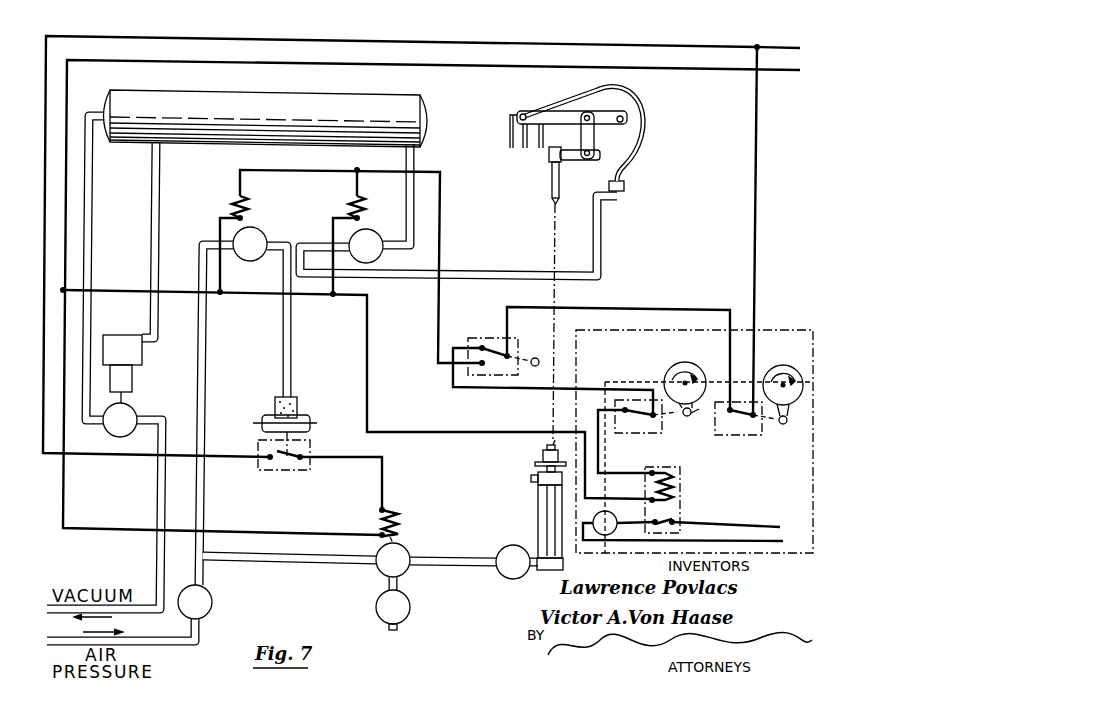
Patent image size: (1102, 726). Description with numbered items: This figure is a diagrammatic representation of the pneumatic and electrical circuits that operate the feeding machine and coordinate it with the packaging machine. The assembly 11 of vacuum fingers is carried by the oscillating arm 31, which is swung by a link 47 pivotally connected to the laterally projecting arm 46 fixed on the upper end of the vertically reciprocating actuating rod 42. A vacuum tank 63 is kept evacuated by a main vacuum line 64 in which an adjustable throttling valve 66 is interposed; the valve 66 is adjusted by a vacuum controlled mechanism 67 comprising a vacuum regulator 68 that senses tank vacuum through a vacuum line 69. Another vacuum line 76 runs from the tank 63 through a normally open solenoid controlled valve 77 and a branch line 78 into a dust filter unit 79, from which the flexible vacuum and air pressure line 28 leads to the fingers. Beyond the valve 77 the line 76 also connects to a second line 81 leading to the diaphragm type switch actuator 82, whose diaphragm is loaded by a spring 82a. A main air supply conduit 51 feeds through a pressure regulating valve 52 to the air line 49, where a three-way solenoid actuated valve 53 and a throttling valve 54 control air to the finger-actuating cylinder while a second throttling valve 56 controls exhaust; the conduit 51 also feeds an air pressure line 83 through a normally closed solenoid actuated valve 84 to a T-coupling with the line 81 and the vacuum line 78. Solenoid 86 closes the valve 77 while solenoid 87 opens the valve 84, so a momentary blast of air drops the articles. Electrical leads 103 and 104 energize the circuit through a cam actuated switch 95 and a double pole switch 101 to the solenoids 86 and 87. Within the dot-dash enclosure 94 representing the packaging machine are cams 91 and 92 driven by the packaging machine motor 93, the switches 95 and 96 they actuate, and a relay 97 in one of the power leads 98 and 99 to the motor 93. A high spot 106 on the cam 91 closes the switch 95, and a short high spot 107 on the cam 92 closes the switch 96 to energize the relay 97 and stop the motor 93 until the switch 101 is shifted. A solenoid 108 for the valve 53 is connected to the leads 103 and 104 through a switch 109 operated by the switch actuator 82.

The assembly of vacuum fingers 11 is at (500, 133).
The oscillating arm 31 is at (561, 112).
The vacuum and air pressure line 28 is at (644, 118).
The link 47 is at (592, 140).
The actuating rod 42 is at (548, 187).
The laterally projecting arm 46 is at (570, 162).
The dust filter unit 79 is at (626, 196).
The vacuum line 76 is at (414, 160).
The vacuum tank 63 is at (155, 130).
The main vacuum line 64 is at (93, 214).
The solenoid 87 is at (238, 203).
The solenoid 86 is at (353, 203).
The vacuum line 69 is at (152, 268).
The solenoid actuated valve 84 is at (266, 256).
The solenoid controlled valve 77 is at (385, 258).
The branch line 78 is at (385, 278).
The double pole switch 101 is at (495, 336).
The vacuum regulator 68 is at (125, 335).
The vacuum controlled mechanism 67 is at (145, 364).
The throttling valve 66 is at (137, 407).
The air pressure line 83 is at (204, 356).
The second line 81 is at (292, 353).
The switch actuator 82 is at (300, 412).
The spring 82a is at (275, 408).
The enclosure 94 is at (657, 333).
The cam 92 is at (677, 362).
The cam 91 is at (774, 364).
The high spot 107 is at (687, 417).
The switch 96 is at (628, 436).
The switch 95 is at (745, 438).
The high spot 106 is at (795, 423).
The relay 97 is at (683, 498).
The electrical power lead 98 is at (738, 523).
The electrical power lead 99 is at (782, 537).
The packaging machine motor 93 is at (600, 546).
The switch 109 is at (271, 472).
The solenoid 108 is at (400, 508).
The three-way solenoid actuated valve 53 is at (410, 548).
The air line 49 is at (280, 560).
The throttling valve 54 is at (500, 572).
The throttling valve 56 is at (376, 609).
The pressure regulating valve 52 is at (214, 603).
The main air supply conduit 51 is at (175, 650).
The electrical lead 103 is at (787, 47).
The electrical lead 104 is at (787, 76).